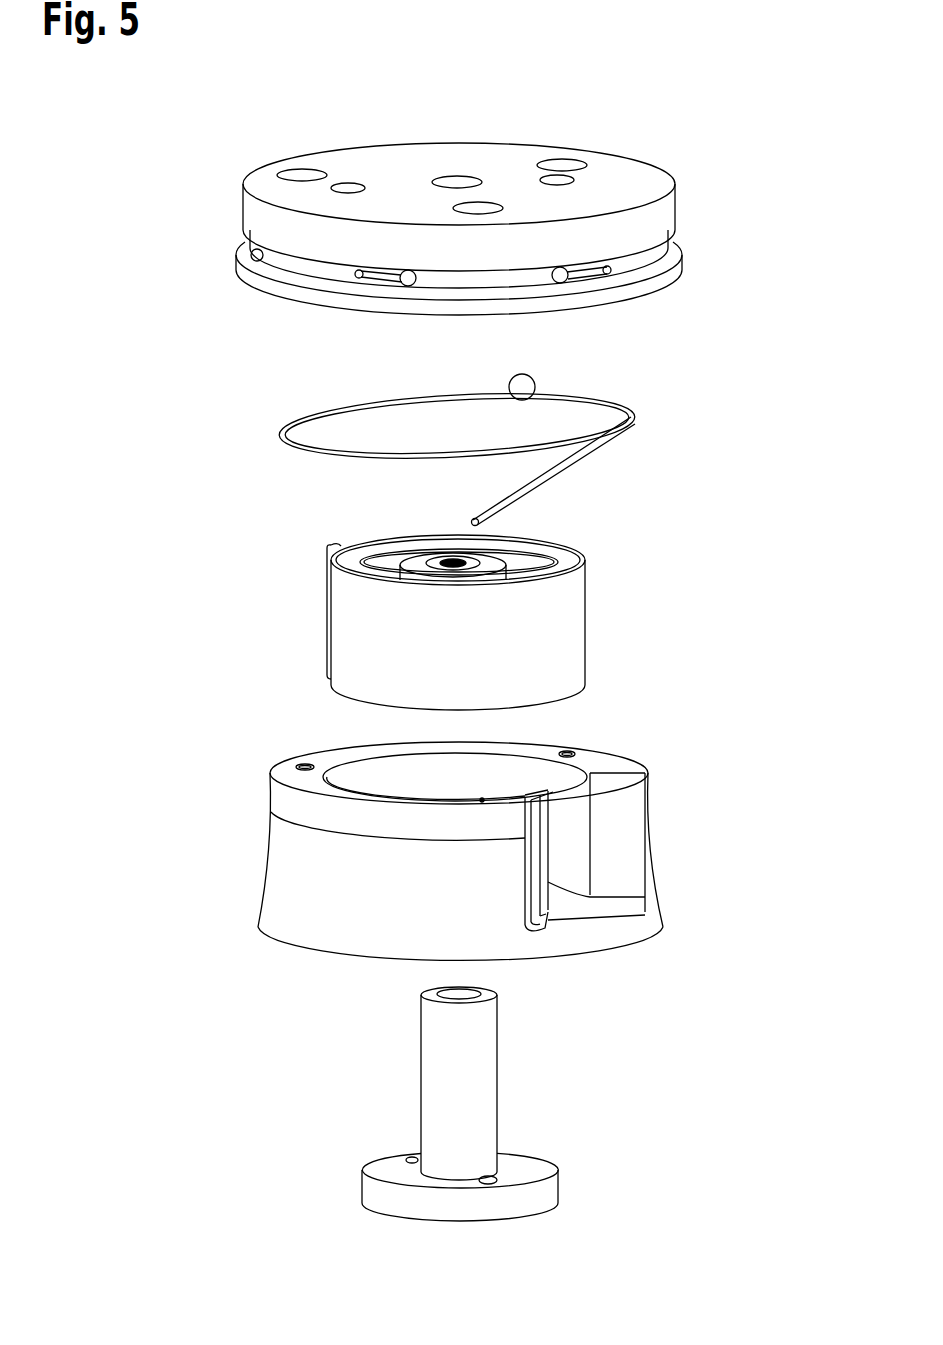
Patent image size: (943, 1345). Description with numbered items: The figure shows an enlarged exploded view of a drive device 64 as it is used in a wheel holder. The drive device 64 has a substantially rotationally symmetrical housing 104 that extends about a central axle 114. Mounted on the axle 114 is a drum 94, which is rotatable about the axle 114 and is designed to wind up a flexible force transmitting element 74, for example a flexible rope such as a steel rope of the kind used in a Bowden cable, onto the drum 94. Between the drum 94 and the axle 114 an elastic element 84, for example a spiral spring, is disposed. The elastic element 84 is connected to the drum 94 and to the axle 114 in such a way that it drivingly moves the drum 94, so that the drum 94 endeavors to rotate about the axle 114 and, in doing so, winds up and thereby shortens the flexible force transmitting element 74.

The drive device 64 is at (719, 151).
The drum 94 is at (248, 314).
The flexible force transmitting element 74 is at (661, 381).
The elastic element 84 is at (620, 598).
The housing 104 is at (680, 739).
The axle 114 is at (541, 1071).